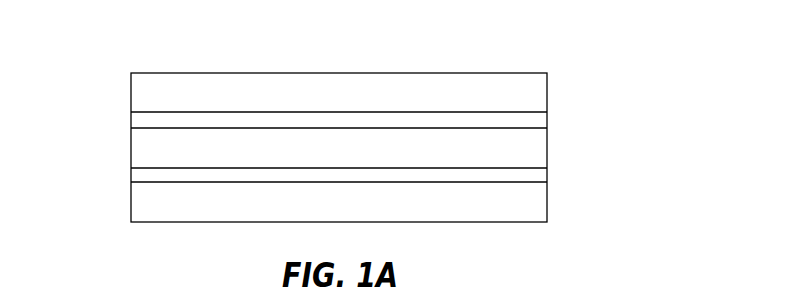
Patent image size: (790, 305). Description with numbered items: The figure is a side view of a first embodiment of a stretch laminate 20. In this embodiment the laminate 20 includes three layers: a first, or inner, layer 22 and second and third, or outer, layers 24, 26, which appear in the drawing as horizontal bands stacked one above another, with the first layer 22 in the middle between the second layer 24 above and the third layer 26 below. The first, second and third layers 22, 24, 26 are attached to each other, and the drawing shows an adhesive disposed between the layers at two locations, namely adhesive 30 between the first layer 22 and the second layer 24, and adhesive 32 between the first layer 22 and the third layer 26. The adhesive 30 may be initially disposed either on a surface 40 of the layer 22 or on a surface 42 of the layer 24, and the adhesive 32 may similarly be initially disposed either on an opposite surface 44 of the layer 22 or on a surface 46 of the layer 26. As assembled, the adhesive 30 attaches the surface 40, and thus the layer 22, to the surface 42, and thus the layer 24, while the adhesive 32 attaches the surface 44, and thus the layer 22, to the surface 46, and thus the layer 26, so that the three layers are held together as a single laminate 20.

The stretch laminate 20 is at (380, 53).
The first layer 22 is at (536, 152).
The second layer 24 is at (536, 94).
The third layer 26 is at (536, 213).
The adhesive 30 is at (135, 119).
The adhesive 32 is at (135, 174).
The surface of the first layer 40 is at (510, 128).
The surface of the second layer 42 is at (533, 117).
The opposite surface of the first layer 44 is at (533, 172).
The surface of the third layer 46 is at (510, 182).